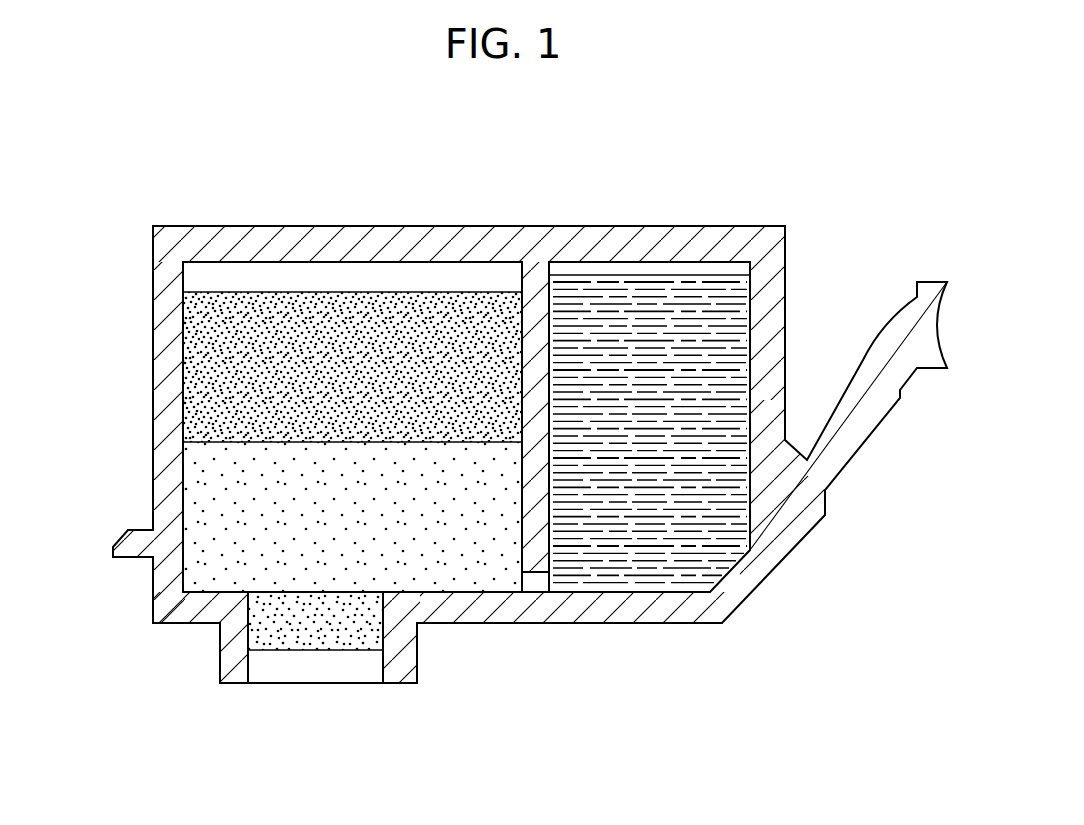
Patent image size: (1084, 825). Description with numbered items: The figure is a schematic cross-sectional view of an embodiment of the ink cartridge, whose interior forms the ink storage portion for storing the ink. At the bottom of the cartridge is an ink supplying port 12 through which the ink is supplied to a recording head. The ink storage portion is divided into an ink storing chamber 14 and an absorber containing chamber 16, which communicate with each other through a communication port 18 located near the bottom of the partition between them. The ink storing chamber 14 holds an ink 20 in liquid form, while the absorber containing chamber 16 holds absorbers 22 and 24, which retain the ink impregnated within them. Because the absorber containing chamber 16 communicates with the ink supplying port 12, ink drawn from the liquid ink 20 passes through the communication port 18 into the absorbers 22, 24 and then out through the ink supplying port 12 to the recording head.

The ink supplying port 12 is at (325, 667).
The ink storing chamber 14 is at (672, 268).
The absorber containing chamber 16 is at (365, 268).
The communication port 18 is at (537, 583).
The ink 20 is at (663, 575).
The absorber 22 is at (213, 484).
The absorber 24 is at (213, 356).